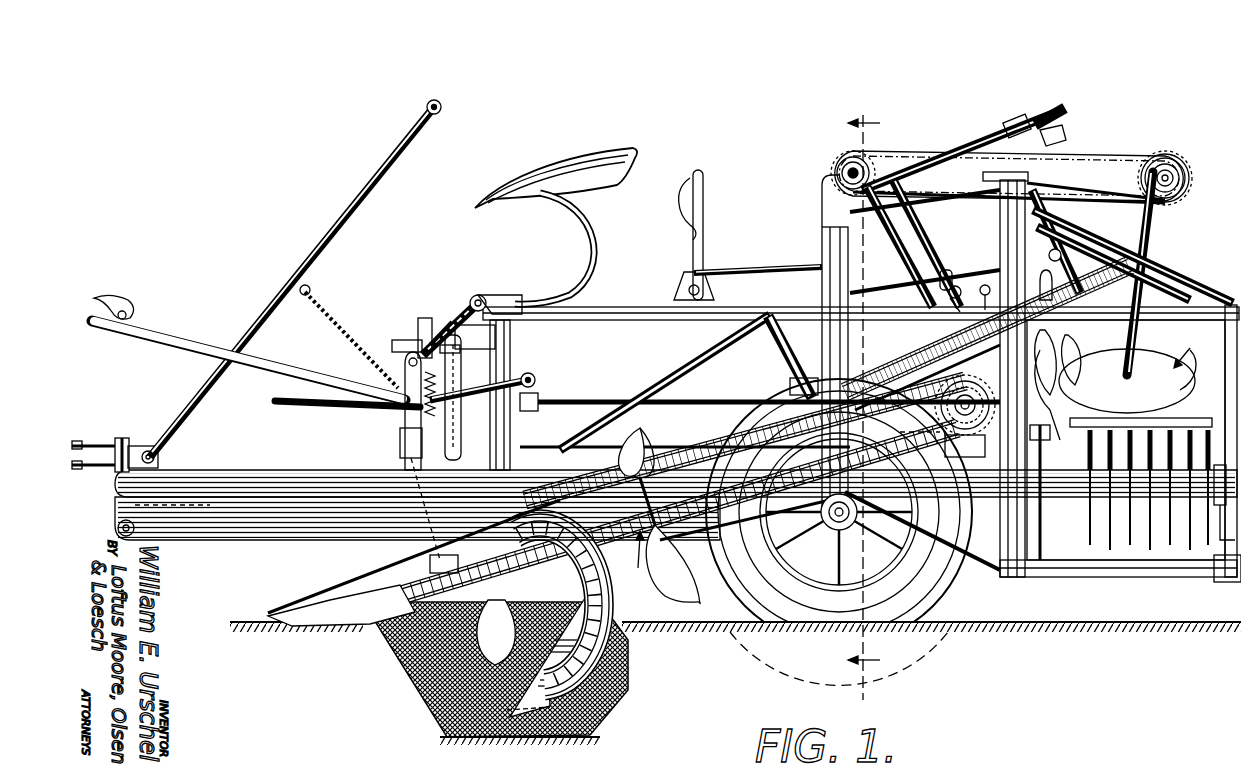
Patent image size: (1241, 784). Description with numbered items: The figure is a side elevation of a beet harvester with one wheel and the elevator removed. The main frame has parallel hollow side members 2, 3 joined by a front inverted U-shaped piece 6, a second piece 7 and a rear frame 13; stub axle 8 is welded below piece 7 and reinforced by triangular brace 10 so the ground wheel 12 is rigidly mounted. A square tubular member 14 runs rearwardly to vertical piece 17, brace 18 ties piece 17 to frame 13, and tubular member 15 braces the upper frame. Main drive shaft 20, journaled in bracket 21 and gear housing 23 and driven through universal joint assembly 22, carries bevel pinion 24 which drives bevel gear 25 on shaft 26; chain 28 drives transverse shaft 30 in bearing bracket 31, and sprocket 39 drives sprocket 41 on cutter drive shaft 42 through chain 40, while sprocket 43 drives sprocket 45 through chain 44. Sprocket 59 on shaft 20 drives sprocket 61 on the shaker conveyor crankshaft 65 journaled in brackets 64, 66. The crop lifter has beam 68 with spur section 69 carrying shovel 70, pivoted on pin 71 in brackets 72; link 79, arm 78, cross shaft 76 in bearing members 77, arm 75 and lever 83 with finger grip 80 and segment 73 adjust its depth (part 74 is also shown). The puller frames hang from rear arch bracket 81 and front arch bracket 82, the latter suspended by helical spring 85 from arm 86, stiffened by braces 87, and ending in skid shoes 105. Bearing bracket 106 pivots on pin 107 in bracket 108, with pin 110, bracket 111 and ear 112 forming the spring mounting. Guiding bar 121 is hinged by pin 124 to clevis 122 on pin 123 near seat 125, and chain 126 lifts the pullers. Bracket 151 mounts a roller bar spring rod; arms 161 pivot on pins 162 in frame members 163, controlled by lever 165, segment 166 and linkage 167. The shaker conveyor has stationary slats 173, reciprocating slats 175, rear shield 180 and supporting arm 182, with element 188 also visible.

The hollow steel side member 2 is at (1126, 440).
The hollow steel side member 3 is at (200, 470).
The inverted U-shaped piece 6 is at (512, 360).
The inverted U-shaped piece 7 is at (822, 240).
The stub axle 8 is at (822, 516).
The triangular brace 10 is at (710, 530).
The ground wheel 12 is at (712, 600).
The inverted U-shaped frame 13 is at (1004, 575).
The square tubular member 14 is at (1058, 578).
The square tubular member 15 is at (598, 307).
The vertical piece 17 is at (1225, 580).
The brace 18 is at (1200, 290).
The main drive shaft 20 is at (626, 400).
The bracket 21 is at (535, 378).
The universal joint assembly 22 is at (276, 404).
The gear housing 23 is at (915, 362).
The bevel pinion 24 is at (915, 380).
The bevel gear 25 is at (926, 438).
The shaft 26 is at (966, 391).
The chain 28 is at (850, 290).
The transverse shaft 30 is at (836, 172).
The bearing bracket 31 is at (822, 196).
The sprocket 39 is at (840, 158).
The chain 40 is at (905, 152).
The sprocket 41 is at (1158, 160).
The cutter drive shaft 42 is at (1172, 168).
The sprocket 43 is at (905, 240).
The chain 44 is at (930, 178).
The sprocket 45 is at (1033, 122).
The sprocket 59 is at (540, 398).
The sprocket 61 is at (548, 446).
The bearing bracket 64 is at (464, 397).
The shaker conveyor crankshaft 65 is at (680, 452).
The bearing bracket 66 is at (1042, 492).
The beam 68 is at (280, 540).
The spur section 69 is at (584, 685).
The shovel 70 is at (480, 730).
The pin 71 is at (135, 533).
The bracket 72 is at (165, 507).
The segment 73 is at (497, 345).
The slide 74 is at (422, 318).
The arm 75 is at (470, 295).
The cross shaft 76 is at (478, 300).
The bearing member 77 is at (500, 296).
The arm 78 is at (405, 370).
The vertical link 79 is at (405, 383).
The finger grip 80 is at (118, 300).
The rear arch bracket 81 is at (790, 348).
The front arch bracket 82 is at (405, 440).
The operating lever 83 is at (162, 333).
The helical spring 85 is at (400, 340).
The arm 86 is at (440, 320).
The brace 87 is at (684, 375).
The skid shoe 105 is at (308, 604).
The bearing bracket 106 is at (1060, 186).
The pin 107 is at (1058, 138).
The bracket 108 is at (1050, 180).
The pin 110 is at (963, 290).
The bracket 111 is at (1052, 250).
The ear 112 is at (1060, 280).
The guiding bar 121 is at (348, 204).
The clevis 122 is at (100, 444).
The pin 123 is at (124, 438).
The pin 124 is at (148, 450).
The seat 125 is at (558, 156).
The chain 126 is at (308, 290).
The bracket 151 is at (977, 280).
The arm 161 is at (1145, 238).
The pin 162 is at (948, 268).
The frame member 163 is at (948, 224).
The hand lever 165 is at (700, 178).
The segment 166 is at (680, 280).
The linkage 167 is at (745, 270).
The stationary slat 173 is at (1158, 555).
The reciprocating slat 175 is at (1110, 560).
The rear shield member 180 is at (1175, 385).
The arm 182 is at (1220, 535).
The brace 188 is at (1140, 256).